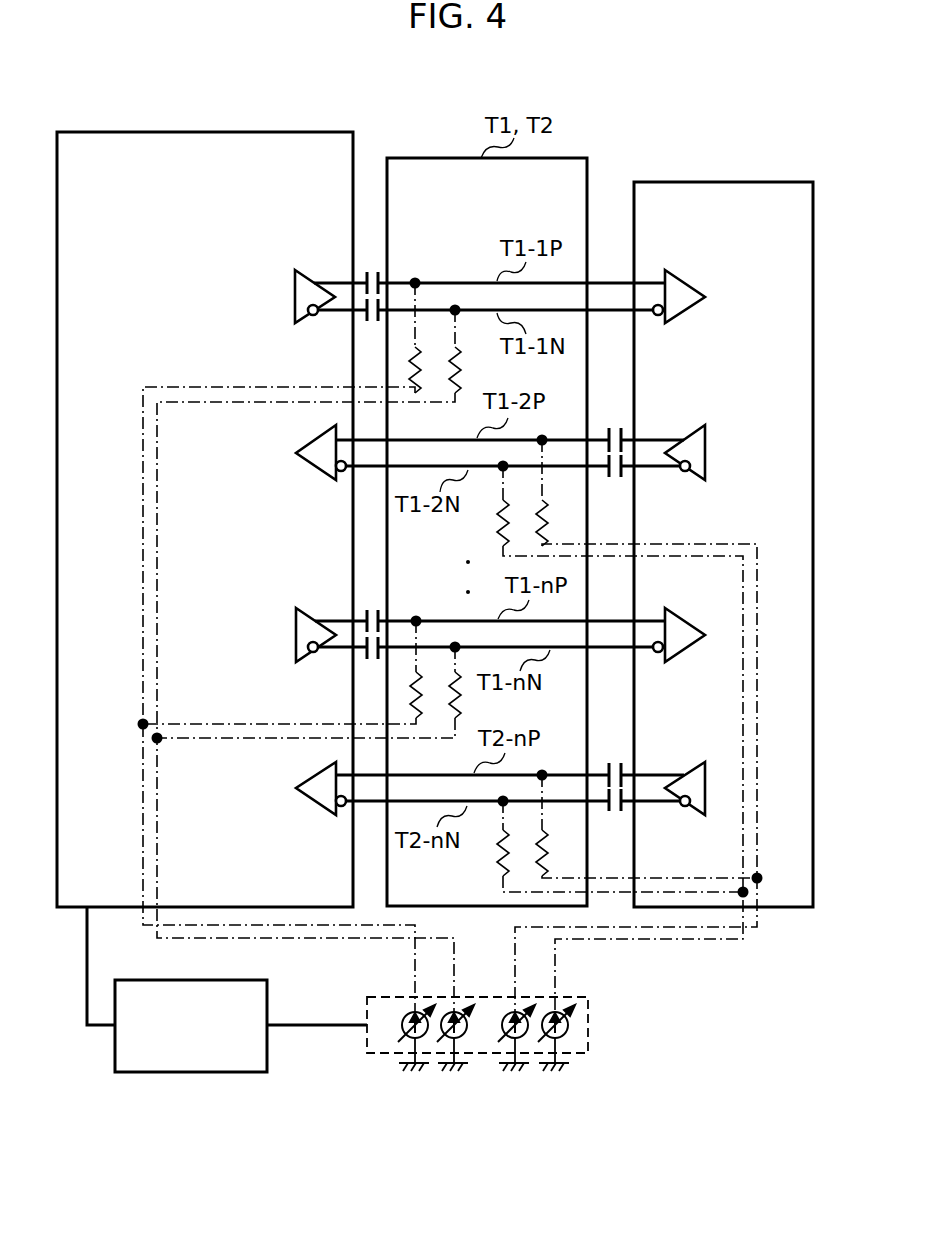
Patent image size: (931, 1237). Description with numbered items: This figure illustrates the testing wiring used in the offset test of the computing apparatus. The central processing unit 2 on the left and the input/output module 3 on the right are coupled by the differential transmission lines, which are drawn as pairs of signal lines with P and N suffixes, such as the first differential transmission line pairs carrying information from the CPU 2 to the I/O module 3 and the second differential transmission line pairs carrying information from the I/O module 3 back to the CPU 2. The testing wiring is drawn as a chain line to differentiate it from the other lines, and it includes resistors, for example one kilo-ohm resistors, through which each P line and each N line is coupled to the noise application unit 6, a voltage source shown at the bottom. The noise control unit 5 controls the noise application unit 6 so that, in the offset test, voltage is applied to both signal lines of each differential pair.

The central processing unit 2 is at (212, 132).
The input/output module 3 is at (713, 182).
The noise control unit 5 is at (268, 1001).
The noise application unit 6 is at (590, 1020).